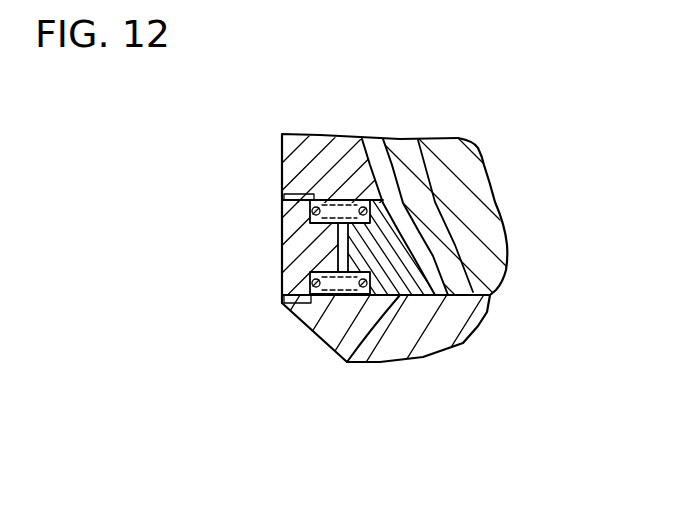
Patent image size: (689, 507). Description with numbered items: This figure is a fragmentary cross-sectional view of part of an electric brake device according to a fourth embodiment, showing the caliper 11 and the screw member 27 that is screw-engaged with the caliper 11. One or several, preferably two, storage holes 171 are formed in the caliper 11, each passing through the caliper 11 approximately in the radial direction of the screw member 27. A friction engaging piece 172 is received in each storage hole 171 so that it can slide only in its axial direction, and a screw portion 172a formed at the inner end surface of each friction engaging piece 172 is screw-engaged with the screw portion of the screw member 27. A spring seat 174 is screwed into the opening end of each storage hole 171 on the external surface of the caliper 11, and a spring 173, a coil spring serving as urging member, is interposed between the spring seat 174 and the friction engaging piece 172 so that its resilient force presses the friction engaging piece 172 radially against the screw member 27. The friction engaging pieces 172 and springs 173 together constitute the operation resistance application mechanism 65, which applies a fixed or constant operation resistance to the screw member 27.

The caliper 11 is at (312, 147).
The screw member 27 is at (413, 147).
The operation resistance application mechanism 65 is at (266, 268).
The storage hole 171 is at (316, 284).
The friction engaging piece 172 is at (330, 352).
The screw portion 172a is at (416, 238).
The spring 173 is at (314, 211).
The spring seat 174 is at (292, 262).